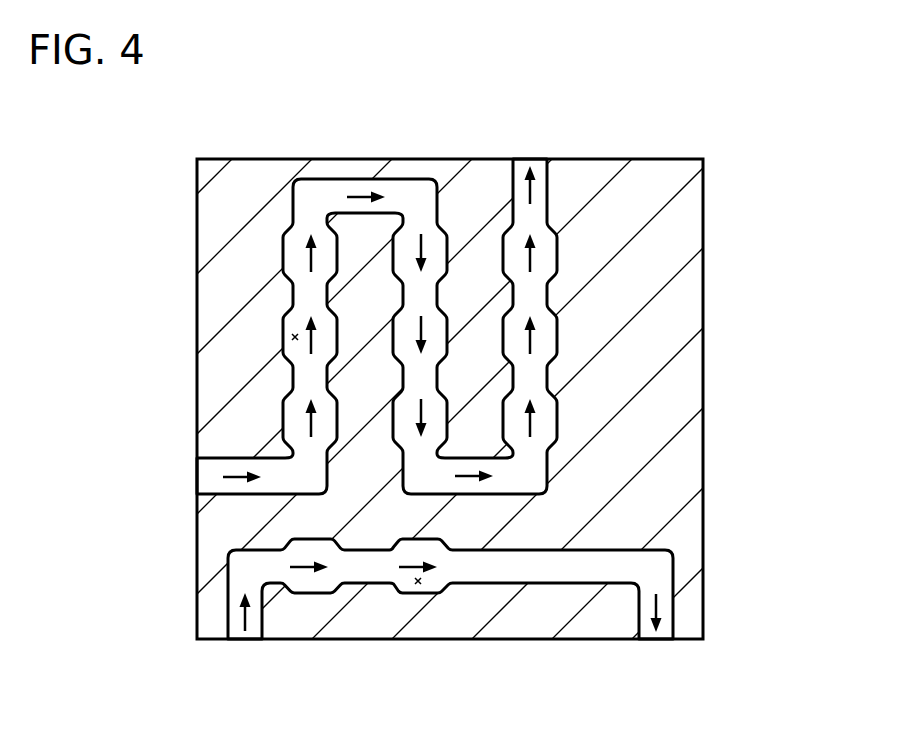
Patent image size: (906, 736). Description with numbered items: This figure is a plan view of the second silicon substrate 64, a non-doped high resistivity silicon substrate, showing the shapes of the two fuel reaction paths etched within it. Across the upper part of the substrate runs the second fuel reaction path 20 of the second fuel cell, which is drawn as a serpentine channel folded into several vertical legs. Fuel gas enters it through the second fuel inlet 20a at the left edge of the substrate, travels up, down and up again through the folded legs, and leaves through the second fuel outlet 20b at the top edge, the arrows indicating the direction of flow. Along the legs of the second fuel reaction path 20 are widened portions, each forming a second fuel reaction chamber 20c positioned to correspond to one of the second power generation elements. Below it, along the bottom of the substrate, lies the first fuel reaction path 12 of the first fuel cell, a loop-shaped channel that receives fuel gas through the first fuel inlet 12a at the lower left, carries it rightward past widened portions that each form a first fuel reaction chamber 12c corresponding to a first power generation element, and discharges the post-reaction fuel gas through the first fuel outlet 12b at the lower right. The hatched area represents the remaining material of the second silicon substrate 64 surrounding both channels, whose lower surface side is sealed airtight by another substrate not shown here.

The second silicon substrate 64 is at (703, 222).
The second fuel reaction path 20 is at (394, 190).
The second fuel inlet 20a is at (197, 472).
The second fuel outlet 20b is at (537, 159).
The second fuel reaction chamber 20c is at (293, 337).
The first fuel reaction path 12 is at (541, 573).
The first fuel inlet 12a is at (245, 639).
The first fuel outlet 12b is at (655, 639).
The first fuel reaction chamber 12c is at (418, 584).